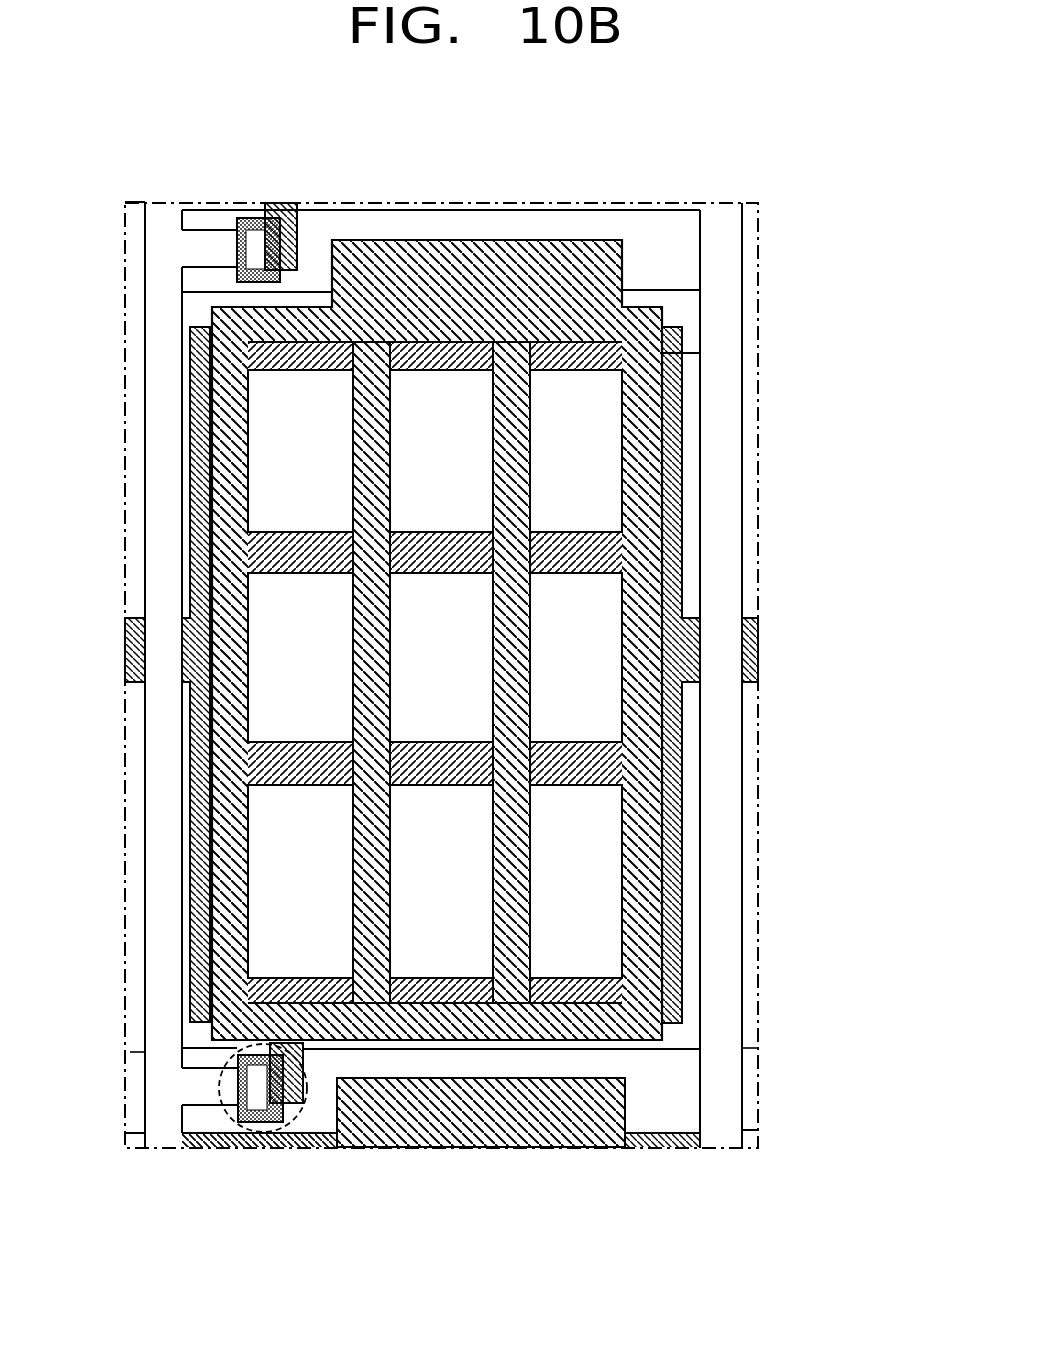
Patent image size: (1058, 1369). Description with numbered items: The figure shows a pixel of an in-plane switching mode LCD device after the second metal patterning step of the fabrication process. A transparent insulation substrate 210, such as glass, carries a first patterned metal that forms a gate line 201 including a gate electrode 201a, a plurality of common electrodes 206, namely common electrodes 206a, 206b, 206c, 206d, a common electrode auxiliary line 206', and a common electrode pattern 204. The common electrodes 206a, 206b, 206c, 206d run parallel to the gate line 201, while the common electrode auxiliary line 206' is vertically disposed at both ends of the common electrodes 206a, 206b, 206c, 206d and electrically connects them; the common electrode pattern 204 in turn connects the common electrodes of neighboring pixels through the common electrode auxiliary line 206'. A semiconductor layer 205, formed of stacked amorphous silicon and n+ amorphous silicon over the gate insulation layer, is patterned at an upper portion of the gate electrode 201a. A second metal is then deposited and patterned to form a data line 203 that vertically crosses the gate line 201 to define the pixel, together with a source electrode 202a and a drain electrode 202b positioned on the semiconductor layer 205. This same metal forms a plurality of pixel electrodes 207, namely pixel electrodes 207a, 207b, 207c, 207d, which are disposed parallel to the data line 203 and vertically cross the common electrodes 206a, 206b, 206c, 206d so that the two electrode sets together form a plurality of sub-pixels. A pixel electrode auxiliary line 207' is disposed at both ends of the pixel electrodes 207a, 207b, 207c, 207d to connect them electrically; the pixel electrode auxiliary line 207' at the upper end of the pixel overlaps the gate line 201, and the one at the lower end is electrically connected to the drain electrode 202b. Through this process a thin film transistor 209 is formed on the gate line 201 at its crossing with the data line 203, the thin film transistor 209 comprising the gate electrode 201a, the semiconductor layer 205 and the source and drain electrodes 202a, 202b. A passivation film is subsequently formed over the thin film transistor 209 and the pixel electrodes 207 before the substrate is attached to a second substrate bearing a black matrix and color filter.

The gate line 201 is at (753, 1069).
The gate electrode 201a is at (267, 1127).
The source electrode 202a is at (222, 1100).
The drain electrode 202b is at (292, 1113).
The data line 203 is at (733, 1113).
The common electrode pattern 204 is at (127, 658).
The semiconductor layer 205 is at (247, 1120).
The common electrodes 206 is at (586, 674).
The common electrode 206a is at (622, 355).
The common electrode 206b is at (622, 553).
The common electrode 206c is at (617, 762).
The common electrode 206d is at (551, 991).
The common electrode auxiliary line 206' is at (367, 675).
The pixel electrode 207 is at (568, 759).
The pixel electrode 207a is at (240, 897).
The pixel electrode 207b is at (383, 917).
The pixel electrode 207c is at (520, 907).
The pixel electrode 207d is at (630, 917).
The pixel electrode auxiliary line 207' is at (545, 291).
The thin film transistor 209 is at (218, 1082).
The transparent insulation substrate 210 is at (128, 434).